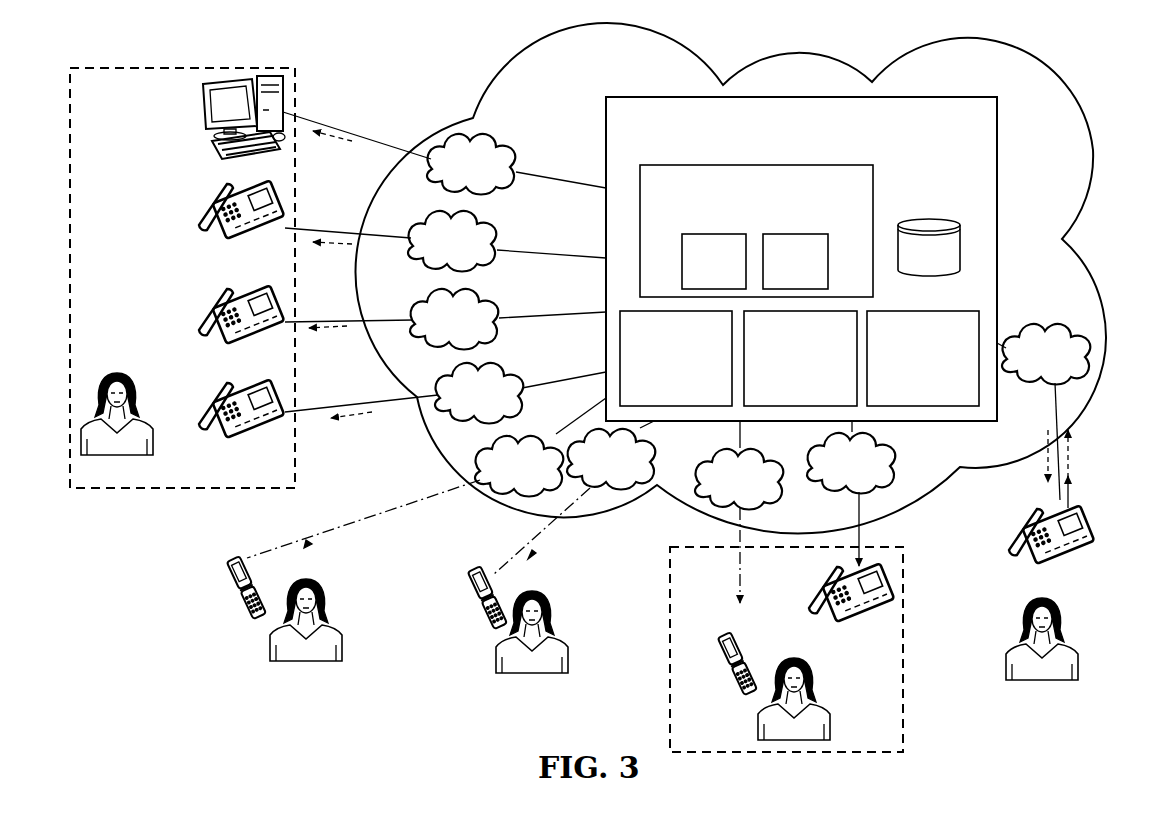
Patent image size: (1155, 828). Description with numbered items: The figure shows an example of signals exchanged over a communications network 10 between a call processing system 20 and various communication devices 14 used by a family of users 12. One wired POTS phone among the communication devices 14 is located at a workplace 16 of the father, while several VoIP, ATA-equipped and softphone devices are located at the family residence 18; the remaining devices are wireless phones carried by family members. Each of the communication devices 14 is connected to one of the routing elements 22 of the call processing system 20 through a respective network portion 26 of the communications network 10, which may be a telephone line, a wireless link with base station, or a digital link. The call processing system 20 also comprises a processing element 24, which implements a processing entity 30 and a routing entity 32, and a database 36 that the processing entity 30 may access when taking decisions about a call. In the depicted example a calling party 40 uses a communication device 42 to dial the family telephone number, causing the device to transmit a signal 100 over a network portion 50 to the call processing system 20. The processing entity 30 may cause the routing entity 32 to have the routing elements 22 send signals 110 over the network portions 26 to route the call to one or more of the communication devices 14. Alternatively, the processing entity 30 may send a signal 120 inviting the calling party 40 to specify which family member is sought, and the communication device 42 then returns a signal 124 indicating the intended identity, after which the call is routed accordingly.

The communications network 10 is at (966, 73).
The users 12 is at (471, 556).
The communication devices 14 is at (534, 391).
The workplace 16 is at (902, 668).
The residence 18 is at (111, 68).
The call processing system 20 is at (814, 154).
The routing elements 22 is at (799, 358).
The processing element 24 is at (767, 219).
The network portions 26 is at (651, 322).
The processing entity 30 is at (702, 272).
The routing entity 32 is at (783, 272).
The database 36 is at (917, 262).
The calling party 40 is at (1072, 654).
The communication device 42 is at (1044, 560).
The network portion 50 is at (1035, 363).
The signal 100 is at (1074, 493).
The signals 110 is at (595, 367).
The signal 120 is at (1046, 456).
The signal 124 is at (1072, 451).